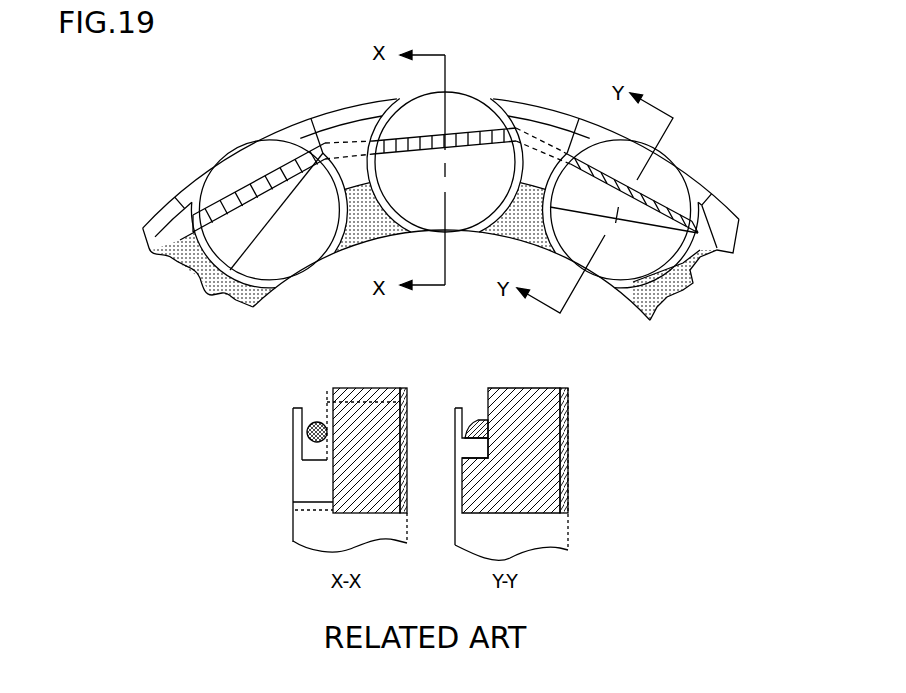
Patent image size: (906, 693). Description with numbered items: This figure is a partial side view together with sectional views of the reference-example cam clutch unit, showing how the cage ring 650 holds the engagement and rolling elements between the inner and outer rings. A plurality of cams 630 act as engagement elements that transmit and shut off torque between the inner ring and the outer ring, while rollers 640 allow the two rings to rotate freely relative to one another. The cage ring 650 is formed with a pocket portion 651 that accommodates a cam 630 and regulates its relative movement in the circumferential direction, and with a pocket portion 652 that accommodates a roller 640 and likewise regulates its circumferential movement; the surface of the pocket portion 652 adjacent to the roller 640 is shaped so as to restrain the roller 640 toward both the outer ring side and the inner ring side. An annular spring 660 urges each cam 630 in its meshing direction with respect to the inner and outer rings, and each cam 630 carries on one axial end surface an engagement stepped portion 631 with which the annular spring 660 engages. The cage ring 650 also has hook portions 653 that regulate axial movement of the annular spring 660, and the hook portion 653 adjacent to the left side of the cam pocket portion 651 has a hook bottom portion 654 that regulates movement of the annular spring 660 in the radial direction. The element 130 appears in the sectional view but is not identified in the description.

The housing block 130 is at (528, 390).
The cam 630 is at (255, 155).
The engagement stepped portion 631 is at (272, 212).
The roller 640 is at (422, 118).
The cage ring 650 is at (560, 123).
The pocket portion 651 is at (306, 129).
The pocket portion 652 is at (485, 101).
The hook portion 653 is at (298, 427).
The hook bottom portion 654 is at (528, 140).
The annular spring 660 is at (663, 192).